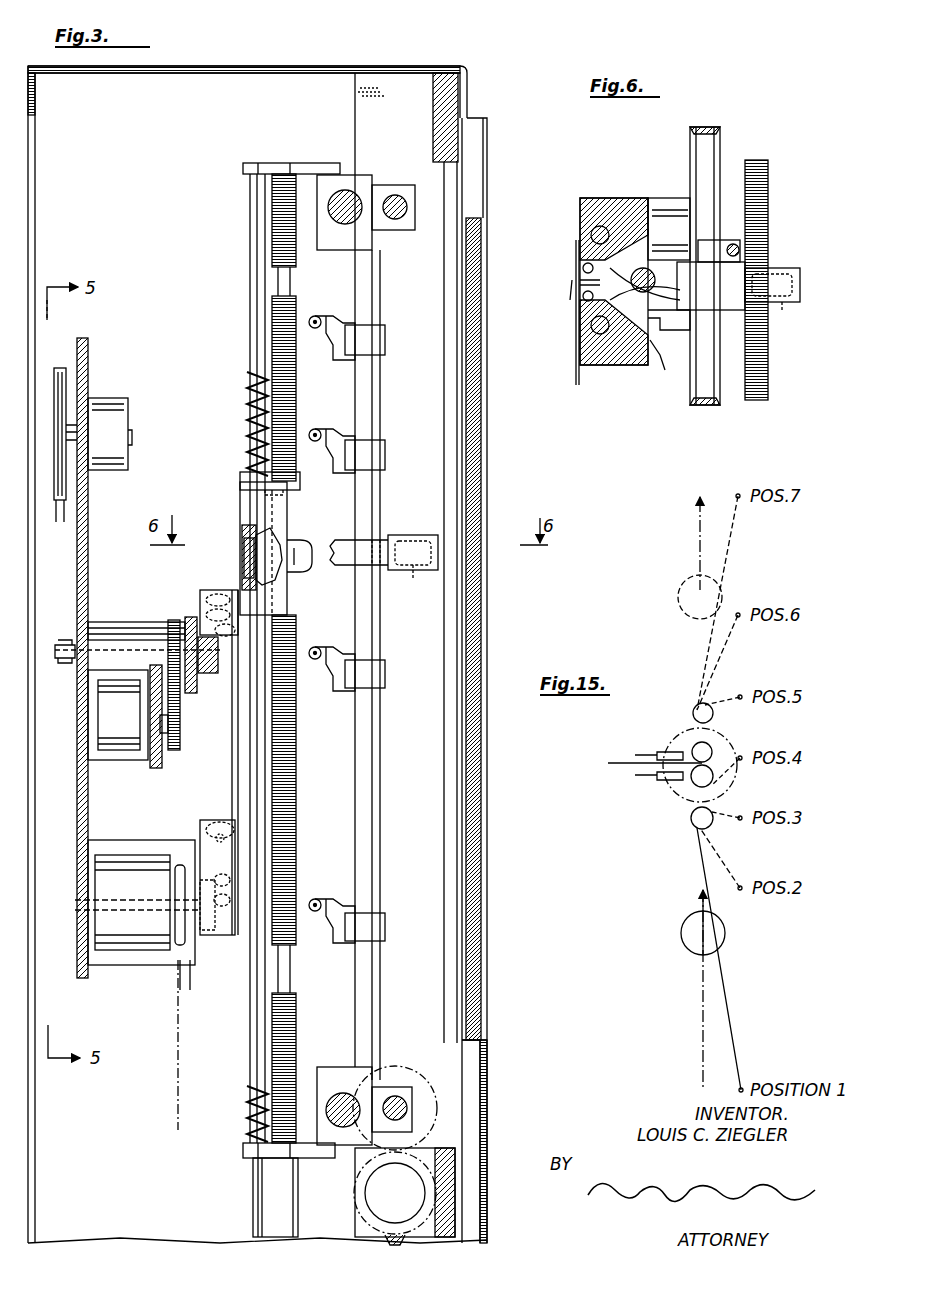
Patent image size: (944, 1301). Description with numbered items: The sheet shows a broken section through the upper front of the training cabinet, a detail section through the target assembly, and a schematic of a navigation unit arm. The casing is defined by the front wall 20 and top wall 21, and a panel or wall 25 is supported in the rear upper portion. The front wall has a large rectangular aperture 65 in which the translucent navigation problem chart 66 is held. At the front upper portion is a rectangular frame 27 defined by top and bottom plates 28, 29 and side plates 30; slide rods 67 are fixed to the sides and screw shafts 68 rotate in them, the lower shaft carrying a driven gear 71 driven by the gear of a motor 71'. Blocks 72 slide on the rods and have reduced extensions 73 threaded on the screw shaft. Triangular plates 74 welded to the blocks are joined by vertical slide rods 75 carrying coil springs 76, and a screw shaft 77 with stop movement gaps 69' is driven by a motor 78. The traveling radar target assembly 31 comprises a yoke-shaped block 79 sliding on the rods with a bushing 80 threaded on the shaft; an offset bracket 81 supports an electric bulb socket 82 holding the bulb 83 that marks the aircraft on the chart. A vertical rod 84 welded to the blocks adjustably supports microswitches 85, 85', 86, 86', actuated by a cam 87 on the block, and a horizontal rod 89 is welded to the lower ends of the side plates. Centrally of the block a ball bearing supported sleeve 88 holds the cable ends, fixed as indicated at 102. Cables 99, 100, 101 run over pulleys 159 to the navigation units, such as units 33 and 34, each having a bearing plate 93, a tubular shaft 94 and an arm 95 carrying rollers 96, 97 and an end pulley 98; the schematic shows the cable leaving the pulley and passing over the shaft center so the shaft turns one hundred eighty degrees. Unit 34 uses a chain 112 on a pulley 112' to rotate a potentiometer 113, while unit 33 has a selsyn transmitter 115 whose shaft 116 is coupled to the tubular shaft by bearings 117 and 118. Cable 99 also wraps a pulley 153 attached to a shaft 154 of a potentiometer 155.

In FIG. 3, the front wall 20 is at (488, 1055).
In FIG. 3, the top wall 21 is at (272, 70).
In FIG. 3, the panel or wall 25 is at (86, 340).
In FIG. 3, the rectangular frame 27 is at (450, 190).
In FIG. 3, the top plate 28 is at (450, 145).
In FIG. 3, the bottom plate 29 is at (445, 1170).
In FIG. 3, the side plate 30 is at (356, 92).
In FIG. 3, the traveling radar target assembly 31 is at (243, 478).
In FIG. 6, the traveling radar target assembly 31 is at (586, 196).
In FIG. 3, the navigation unit 33 is at (198, 598).
In FIG. 3, the navigation unit 34 is at (202, 820).
In FIG. 3, the rectangular aperture 65 is at (481, 1035).
In FIG. 3, the navigation problem chart 66 is at (482, 880).
In FIG. 3, the slide rod 67 is at (350, 198).
In FIG. 6, the slide rod 67 is at (695, 395).
In FIG. 3, the screw shaft 68 is at (400, 215).
In FIG. 6, the screw shaft 68 is at (757, 400).
In FIG. 3, the stop movement gap 69' is at (252, 623).
In FIG. 3, the driven gear 71 is at (395, 1095).
In FIG. 3, the motor 71' is at (392, 1192).
In FIG. 3, the block 72 is at (345, 175).
In FIG. 6, the block 72 is at (735, 310).
In FIG. 3, the reduced extension 73 is at (405, 185).
In FIG. 3, the triangular plate 74 is at (300, 163).
In FIG. 3, the vertical slide rod 75 is at (250, 305).
In FIG. 6, the vertical slide rod 75 is at (592, 232).
In FIG. 3, the coil spring 76 is at (252, 375).
In FIG. 3, the screw shaft 77 is at (292, 312).
In FIG. 6, the screw shaft 77 is at (640, 268).
In FIG. 3, the motor 78 is at (268, 1183).
In FIG. 3, the yoke-shaped block 79 is at (240, 495).
In FIG. 6, the yoke-shaped block 79 is at (640, 198).
In FIG. 3, the bushing 80 is at (300, 482).
In FIG. 3, the offset bracket 81 is at (348, 568).
In FIG. 6, the offset bracket 81 is at (665, 370).
In FIG. 3, the electric bulb socket 82 is at (398, 535).
In FIG. 6, the electric bulb socket 82 is at (785, 268).
In FIG. 3, the bulb 83 is at (412, 583).
In FIG. 6, the bulb 83 is at (784, 312).
In FIG. 3, the vertical rod 84 is at (378, 710).
In FIG. 6, the vertical rod 84 is at (757, 240).
In FIG. 3, the microswitch 85 is at (362, 661).
In FIG. 6, the microswitch 85 is at (724, 204).
In FIG. 3, the microswitch 85' is at (368, 432).
In FIG. 3, the microswitch 86 is at (362, 910).
In FIG. 3, the microswitch 86' is at (365, 342).
In FIG. 3, the cam 87 is at (304, 572).
In FIG. 6, the cam 87 is at (667, 200).
In FIG. 3, the ball bearing supported sleeve 88 is at (244, 528).
In FIG. 6, the ball bearing supported sleeve 88 is at (669, 325).
In FIG. 3, the horizontal rod 89 is at (395, 1236).
In FIG. 3, the bearing plate 93 is at (182, 680).
In FIG. 3, the tubular shaft 94 is at (125, 640).
In FIG. 15, the tubular shaft 94 is at (642, 762).
In FIG. 3, the arm 95 is at (212, 673).
In FIG. 15, the arm 95 is at (655, 778).
In FIG. 15, the roller 96 is at (692, 725).
In FIG. 15, the roller 97 is at (725, 690).
In FIG. 15, the end pulley 98 is at (680, 592).
In FIG. 3, the cable 99 is at (60, 368).
In FIG. 6, the cable 99 is at (577, 260).
In FIG. 3, the cable 100 is at (243, 560).
In FIG. 6, the cable 100 is at (580, 282).
In FIG. 3, the cable 101 is at (232, 752).
In FIG. 6, the cable 101 is at (576, 318).
In FIG. 3, the cable end fixing 102 is at (280, 545).
In FIG. 6, the cable end fixing 102 is at (670, 283).
In FIG. 3, the chain 112 is at (154, 1045).
In FIG. 3, the pulley 112' is at (141, 891).
In FIG. 3, the potentiometer 113 is at (120, 950).
In FIG. 3, the selsyn transmitter 115 is at (98, 712).
In FIG. 3, the shaft 116 is at (156, 718).
In FIG. 3, the direct bearing 117 is at (170, 728).
In FIG. 3, the direct bearing 118 is at (185, 622).
In FIG. 3, the pulley 153 is at (61, 523).
In FIG. 3, the shaft 154 is at (72, 428).
In FIG. 3, the potentiometer 155 is at (120, 400).
In FIG. 3, the pulley 159 is at (58, 640).